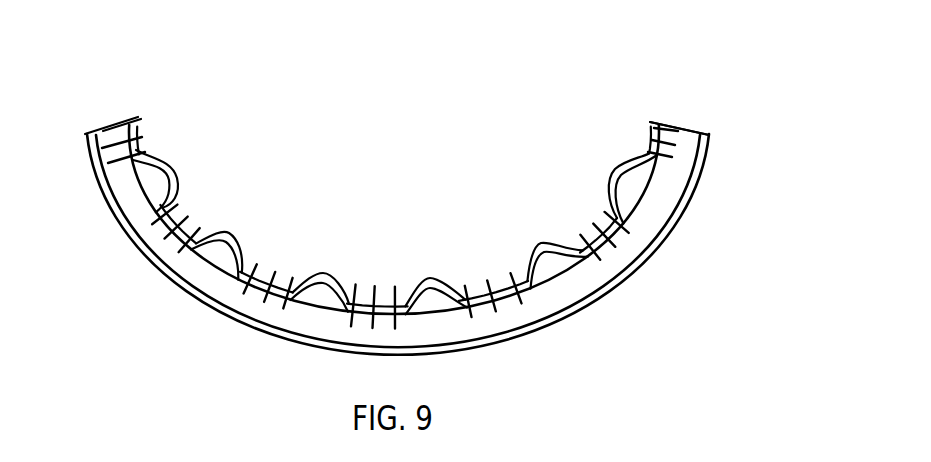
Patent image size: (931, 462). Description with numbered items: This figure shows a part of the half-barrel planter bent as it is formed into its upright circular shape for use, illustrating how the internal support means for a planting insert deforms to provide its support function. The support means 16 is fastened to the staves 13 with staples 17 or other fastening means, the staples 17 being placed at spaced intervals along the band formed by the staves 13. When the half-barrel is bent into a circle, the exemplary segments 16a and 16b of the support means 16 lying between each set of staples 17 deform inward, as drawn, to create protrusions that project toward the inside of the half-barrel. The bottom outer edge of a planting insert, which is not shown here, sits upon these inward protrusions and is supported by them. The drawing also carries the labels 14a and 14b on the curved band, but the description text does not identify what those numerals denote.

The staves 13 is at (690, 128).
The band layer 14a is at (441, 236).
The band layer 14b is at (633, 272).
The support means 16 is at (395, 199).
The segment 16a is at (540, 240).
The segment 16b is at (232, 232).
The staples 17 is at (353, 306).